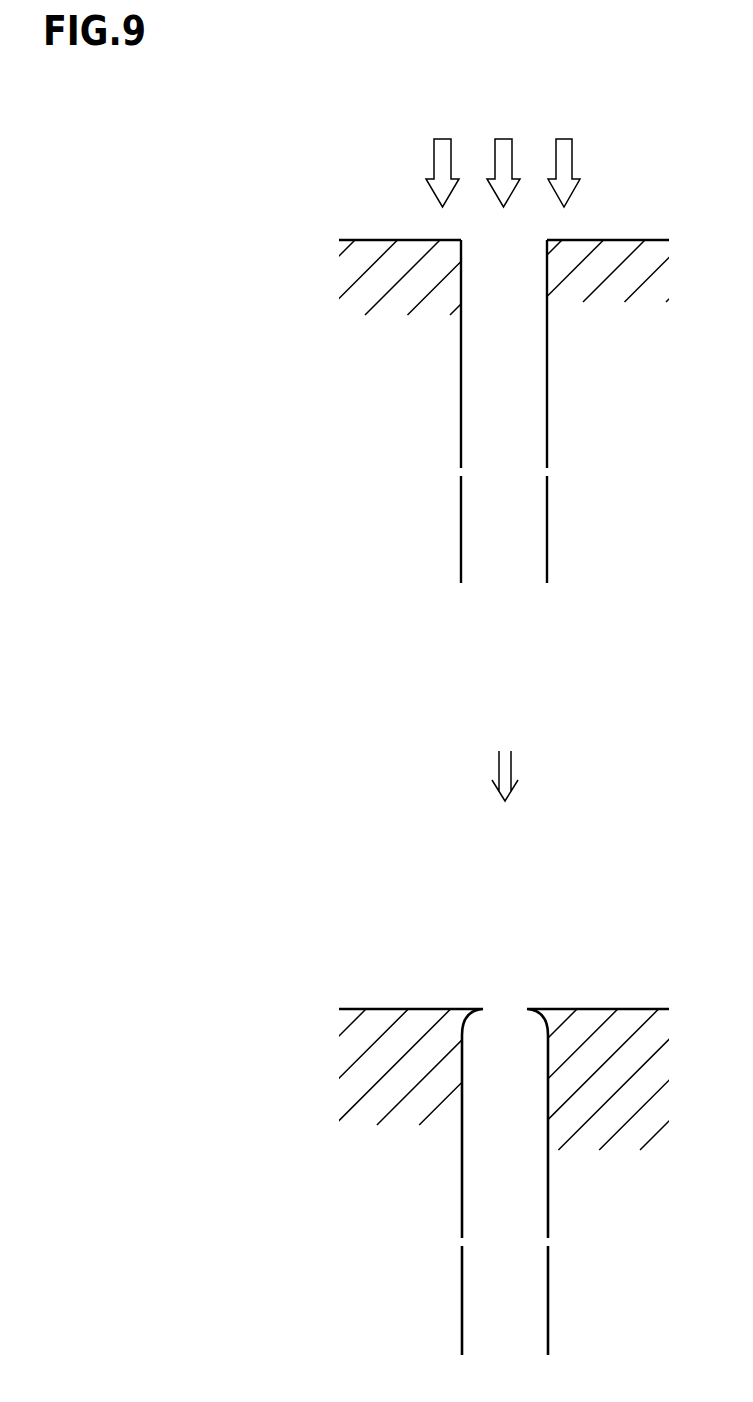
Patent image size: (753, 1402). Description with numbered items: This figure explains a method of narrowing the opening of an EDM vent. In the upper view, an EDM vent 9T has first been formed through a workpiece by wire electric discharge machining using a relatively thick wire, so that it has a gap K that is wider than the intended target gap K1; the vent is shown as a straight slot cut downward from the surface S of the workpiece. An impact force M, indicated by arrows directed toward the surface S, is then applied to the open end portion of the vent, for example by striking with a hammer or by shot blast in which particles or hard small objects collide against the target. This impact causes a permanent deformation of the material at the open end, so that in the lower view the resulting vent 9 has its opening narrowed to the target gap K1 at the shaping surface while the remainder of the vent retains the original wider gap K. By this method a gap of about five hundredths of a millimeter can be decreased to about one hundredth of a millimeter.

The workpiece surface S is at (412, 240).
The impact force M is at (503, 157).
The EDM vent 9T is at (548, 362).
The gap K is at (461, 578).
The finished hole with rounded mouth 9 is at (540, 1003).
The target gap K1 is at (527, 1009).